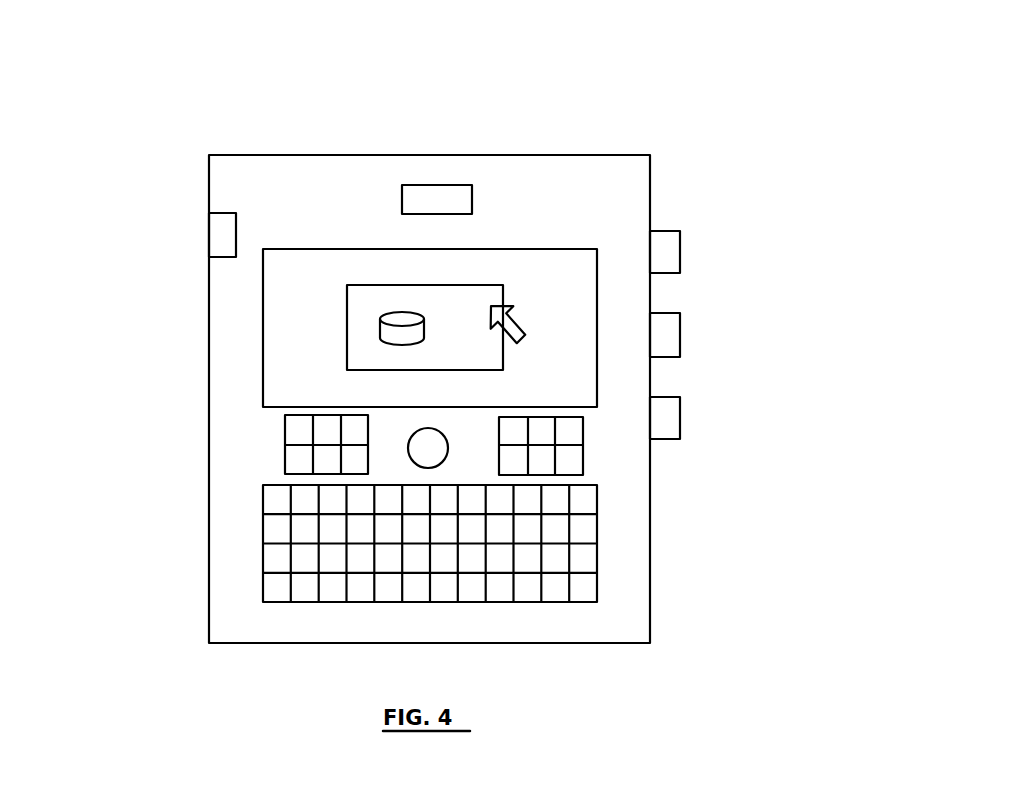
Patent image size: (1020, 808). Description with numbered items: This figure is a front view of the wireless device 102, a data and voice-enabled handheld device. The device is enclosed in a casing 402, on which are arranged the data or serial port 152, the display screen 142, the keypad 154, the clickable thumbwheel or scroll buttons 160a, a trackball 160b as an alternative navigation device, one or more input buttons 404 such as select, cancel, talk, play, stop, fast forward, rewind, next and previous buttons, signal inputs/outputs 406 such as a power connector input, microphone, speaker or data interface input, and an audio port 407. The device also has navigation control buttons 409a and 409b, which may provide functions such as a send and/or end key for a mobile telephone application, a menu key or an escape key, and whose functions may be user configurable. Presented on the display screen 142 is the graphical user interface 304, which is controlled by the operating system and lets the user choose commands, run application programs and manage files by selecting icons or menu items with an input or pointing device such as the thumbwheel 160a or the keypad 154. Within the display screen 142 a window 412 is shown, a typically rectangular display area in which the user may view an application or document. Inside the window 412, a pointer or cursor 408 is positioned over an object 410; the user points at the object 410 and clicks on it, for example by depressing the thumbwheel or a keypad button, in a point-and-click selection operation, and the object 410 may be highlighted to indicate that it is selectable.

The wireless device 102 is at (620, 62).
The casing 402 is at (320, 185).
The signal inputs/outputs 406 is at (442, 185).
The data or serial port 152 is at (222, 233).
The display screen 142 is at (263, 287).
The graphical user interface 304 is at (277, 312).
The window 412 is at (470, 302).
The object 410 is at (380, 328).
The pointer or cursor 408 is at (524, 333).
The navigation control button 409a is at (285, 428).
The navigation control button 409b is at (583, 438).
The trackball 160b is at (435, 462).
The clickable thumbwheel or scroll buttons 160a is at (682, 260).
The input buttons 404 is at (682, 346).
The audio port 407 is at (682, 428).
The keypad 154 is at (597, 528).